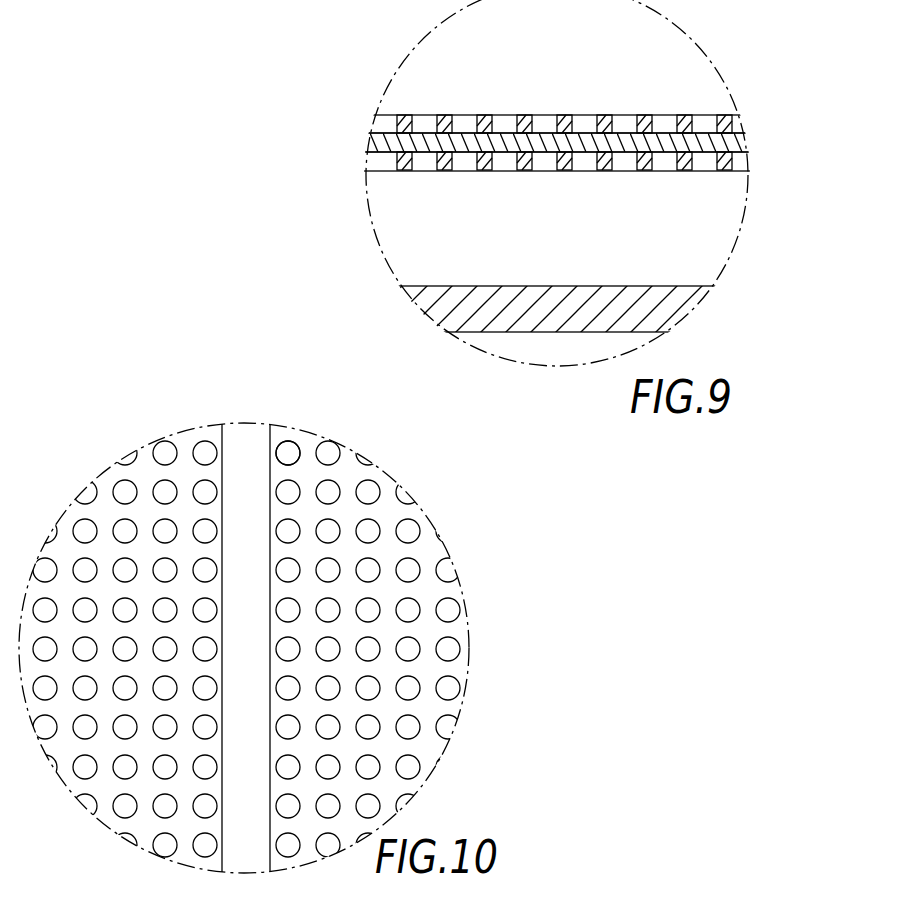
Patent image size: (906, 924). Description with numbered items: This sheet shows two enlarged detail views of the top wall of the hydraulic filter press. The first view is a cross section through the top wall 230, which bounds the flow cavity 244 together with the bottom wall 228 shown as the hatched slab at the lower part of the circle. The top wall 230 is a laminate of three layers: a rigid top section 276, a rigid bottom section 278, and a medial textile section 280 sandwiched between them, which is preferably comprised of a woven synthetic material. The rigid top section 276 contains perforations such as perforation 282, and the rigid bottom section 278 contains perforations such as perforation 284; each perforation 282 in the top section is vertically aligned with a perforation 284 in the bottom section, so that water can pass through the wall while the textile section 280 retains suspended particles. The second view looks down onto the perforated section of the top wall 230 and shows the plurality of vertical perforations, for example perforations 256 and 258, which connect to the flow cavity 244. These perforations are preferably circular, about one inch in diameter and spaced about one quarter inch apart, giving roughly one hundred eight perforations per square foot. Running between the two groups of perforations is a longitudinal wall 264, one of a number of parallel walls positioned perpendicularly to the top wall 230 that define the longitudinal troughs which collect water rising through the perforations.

In FIG. 9, the bottom wall 228 is at (533, 286).
In FIG. 9, the top wall 230 is at (581, 125).
In FIG. 9, the flow cavity 244 is at (738, 222).
In FIG. 9, the rigid top section 276 is at (577, 91).
In FIG. 9, the rigid bottom section 278 is at (581, 189).
In FIG. 9, the medial textile section 280 is at (747, 145).
In FIG. 9, the perforation 282 is at (583, 115).
In FIG. 9, the perforation 284 is at (577, 171).
In FIG. 10, the perforation 256 is at (203, 445).
In FIG. 10, the perforation 258 is at (288, 443).
In FIG. 10, the longitudinal wall 264 is at (245, 422).